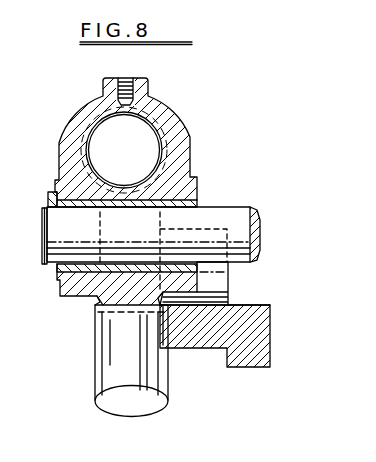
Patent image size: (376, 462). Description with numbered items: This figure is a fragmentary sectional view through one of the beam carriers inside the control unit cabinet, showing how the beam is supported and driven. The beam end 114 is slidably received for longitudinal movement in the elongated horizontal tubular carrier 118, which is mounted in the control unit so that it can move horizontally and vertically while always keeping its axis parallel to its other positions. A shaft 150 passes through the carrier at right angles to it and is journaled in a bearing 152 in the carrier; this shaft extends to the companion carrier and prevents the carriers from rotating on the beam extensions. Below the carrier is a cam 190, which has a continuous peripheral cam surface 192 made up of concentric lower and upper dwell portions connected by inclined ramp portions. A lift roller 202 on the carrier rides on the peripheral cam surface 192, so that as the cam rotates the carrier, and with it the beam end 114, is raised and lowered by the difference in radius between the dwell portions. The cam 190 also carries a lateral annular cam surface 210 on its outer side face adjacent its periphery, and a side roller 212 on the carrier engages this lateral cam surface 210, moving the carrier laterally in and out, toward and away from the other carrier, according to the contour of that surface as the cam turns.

The beam end 114 is at (137, 133).
The tubular carrier 118 is at (188, 132).
The shaft 150 is at (247, 217).
The bearing 152 is at (72, 290).
The cam 190 is at (272, 345).
The peripheral cam surface 192 is at (262, 306).
The lift roller 202 is at (223, 280).
The lateral annular cam surface 210 is at (160, 337).
The side roller 212 is at (120, 408).